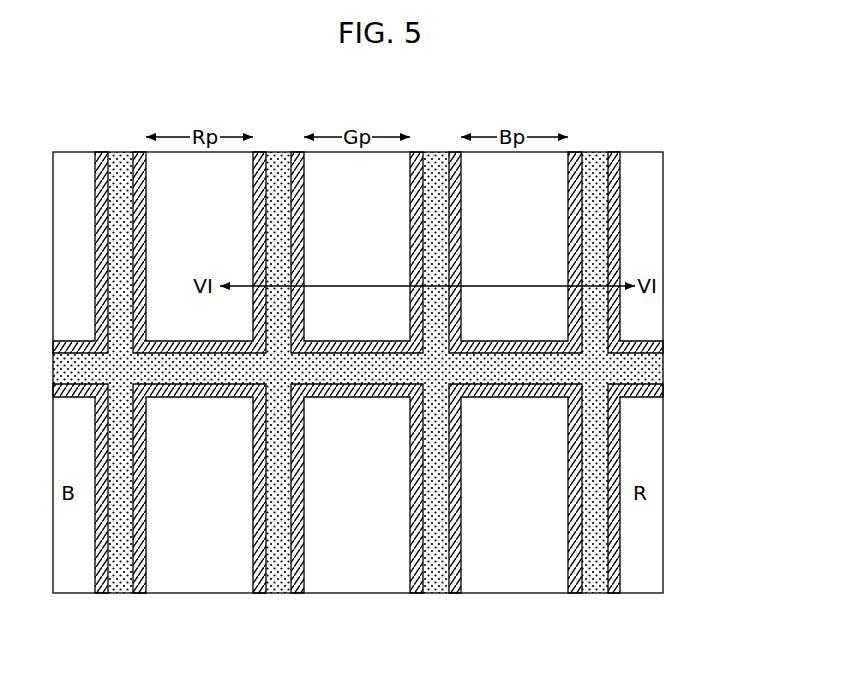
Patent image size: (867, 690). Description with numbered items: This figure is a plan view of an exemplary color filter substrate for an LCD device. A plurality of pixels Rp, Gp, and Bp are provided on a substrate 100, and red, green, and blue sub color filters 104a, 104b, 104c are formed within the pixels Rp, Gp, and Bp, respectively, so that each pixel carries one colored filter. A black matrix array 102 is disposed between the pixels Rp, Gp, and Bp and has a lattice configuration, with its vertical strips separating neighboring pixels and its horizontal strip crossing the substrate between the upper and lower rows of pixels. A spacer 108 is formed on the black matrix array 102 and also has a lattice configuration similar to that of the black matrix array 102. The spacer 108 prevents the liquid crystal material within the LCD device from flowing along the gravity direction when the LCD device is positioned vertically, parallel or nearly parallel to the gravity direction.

The substrate 100 is at (663, 435).
The black matrix array 102 is at (620, 147).
The red sub color filter 104a is at (188, 586).
The green sub color filter 104b is at (348, 582).
The blue sub color filter 104c is at (520, 582).
The spacer 108 is at (668, 354).